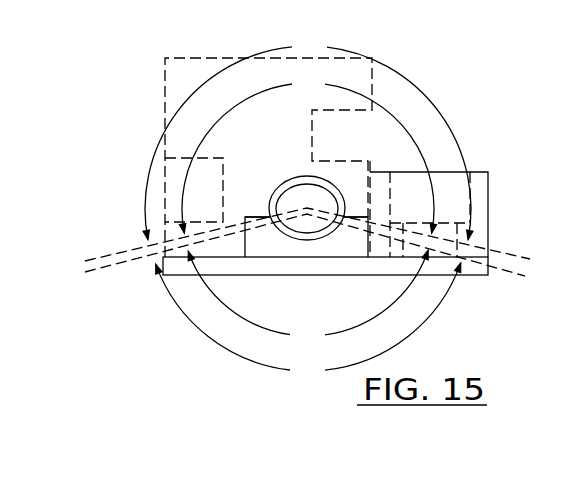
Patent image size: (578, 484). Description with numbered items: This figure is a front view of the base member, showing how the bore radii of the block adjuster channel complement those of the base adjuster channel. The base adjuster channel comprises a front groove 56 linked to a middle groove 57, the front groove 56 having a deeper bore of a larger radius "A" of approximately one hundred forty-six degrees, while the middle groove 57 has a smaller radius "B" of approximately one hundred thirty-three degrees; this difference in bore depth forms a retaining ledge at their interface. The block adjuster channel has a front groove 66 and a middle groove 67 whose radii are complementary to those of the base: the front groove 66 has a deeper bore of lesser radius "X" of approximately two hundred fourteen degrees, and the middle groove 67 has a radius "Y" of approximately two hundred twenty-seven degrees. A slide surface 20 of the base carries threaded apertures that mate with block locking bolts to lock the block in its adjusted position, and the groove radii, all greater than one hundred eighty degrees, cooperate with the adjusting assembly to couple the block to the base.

The slide surface 20 is at (466, 94).
The front groove 66 is at (337, 183).
The middle groove 67 is at (295, 184).
The front groove 56 is at (295, 238).
The middle groove 57 is at (325, 238).